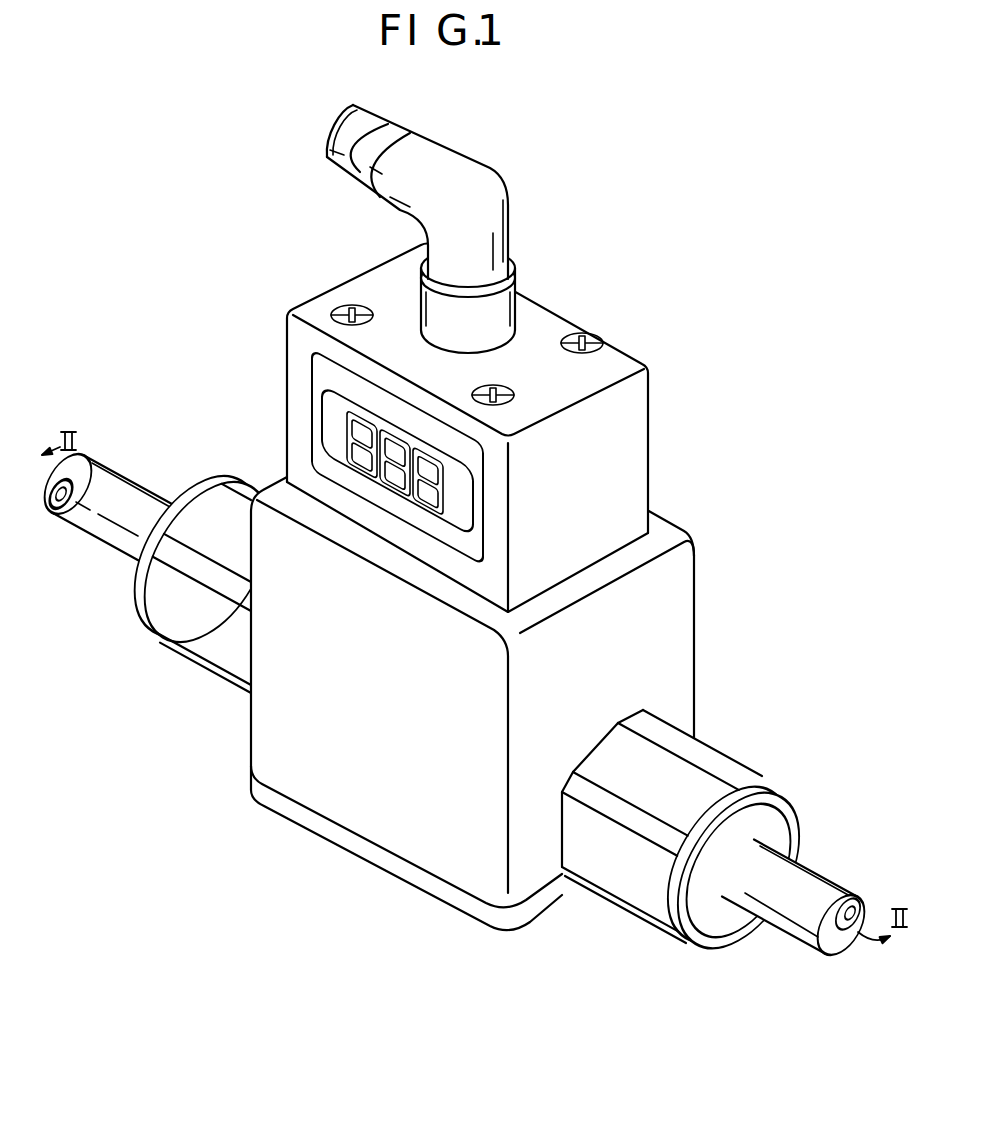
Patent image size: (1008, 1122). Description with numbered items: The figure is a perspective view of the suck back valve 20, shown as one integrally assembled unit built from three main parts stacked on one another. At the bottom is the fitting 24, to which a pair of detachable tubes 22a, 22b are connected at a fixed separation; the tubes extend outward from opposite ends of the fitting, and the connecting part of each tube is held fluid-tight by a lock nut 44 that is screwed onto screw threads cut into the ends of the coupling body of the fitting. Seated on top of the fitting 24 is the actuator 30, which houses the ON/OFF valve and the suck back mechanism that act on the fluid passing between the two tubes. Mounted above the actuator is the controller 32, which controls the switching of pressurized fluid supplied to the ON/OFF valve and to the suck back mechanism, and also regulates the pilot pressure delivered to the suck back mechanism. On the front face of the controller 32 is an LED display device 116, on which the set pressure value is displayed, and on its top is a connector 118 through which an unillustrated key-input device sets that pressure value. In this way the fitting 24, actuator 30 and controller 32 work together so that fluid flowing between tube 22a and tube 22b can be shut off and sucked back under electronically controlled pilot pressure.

The suck back valve 20 is at (653, 175).
The detachable tube 22a is at (127, 498).
The detachable tube 22b is at (803, 884).
The fitting 24 is at (213, 651).
The actuator 30 is at (667, 622).
The controller 32 is at (618, 452).
The lock nut 44 is at (178, 632).
The LED display device 116 is at (463, 503).
The connector 118 is at (513, 292).